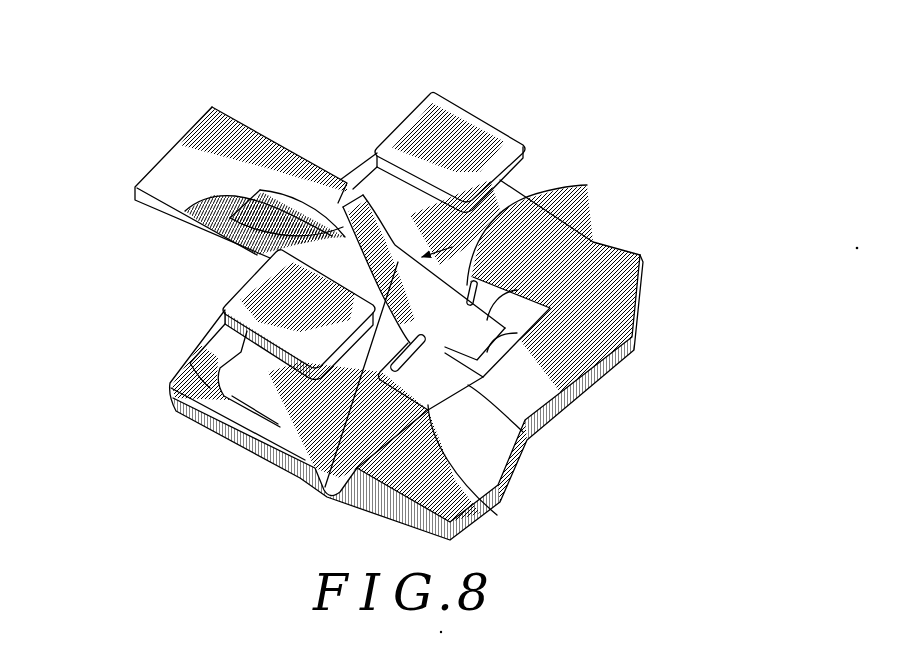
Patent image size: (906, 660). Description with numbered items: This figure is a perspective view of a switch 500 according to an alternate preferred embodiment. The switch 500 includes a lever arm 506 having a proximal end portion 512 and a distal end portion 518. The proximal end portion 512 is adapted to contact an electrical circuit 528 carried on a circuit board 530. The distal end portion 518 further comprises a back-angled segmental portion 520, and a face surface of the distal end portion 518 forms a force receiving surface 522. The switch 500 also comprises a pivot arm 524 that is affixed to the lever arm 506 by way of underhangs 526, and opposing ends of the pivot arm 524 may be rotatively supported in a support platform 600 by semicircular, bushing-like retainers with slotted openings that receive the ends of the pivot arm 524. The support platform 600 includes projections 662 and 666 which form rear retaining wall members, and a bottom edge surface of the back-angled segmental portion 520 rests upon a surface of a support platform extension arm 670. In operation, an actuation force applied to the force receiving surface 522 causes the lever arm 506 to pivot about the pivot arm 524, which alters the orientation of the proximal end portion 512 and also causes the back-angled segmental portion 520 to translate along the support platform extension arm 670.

The switch 500 is at (360, 52).
The lever arm 506 is at (593, 181).
The proximal end portion 512 is at (517, 290).
The distal end portion 518 is at (348, 207).
The back-angled segmental portion 520 is at (183, 209).
The force receiving surface 522 is at (320, 470).
The pivot arm 524 is at (452, 247).
The underhangs 526 is at (483, 503).
The electrical circuit 528 is at (517, 333).
The circuit board 530 is at (523, 437).
The support platform 600 is at (210, 387).
The projection 662 is at (468, 137).
The projection 666 is at (263, 312).
The support platform extension arm 670 is at (220, 140).